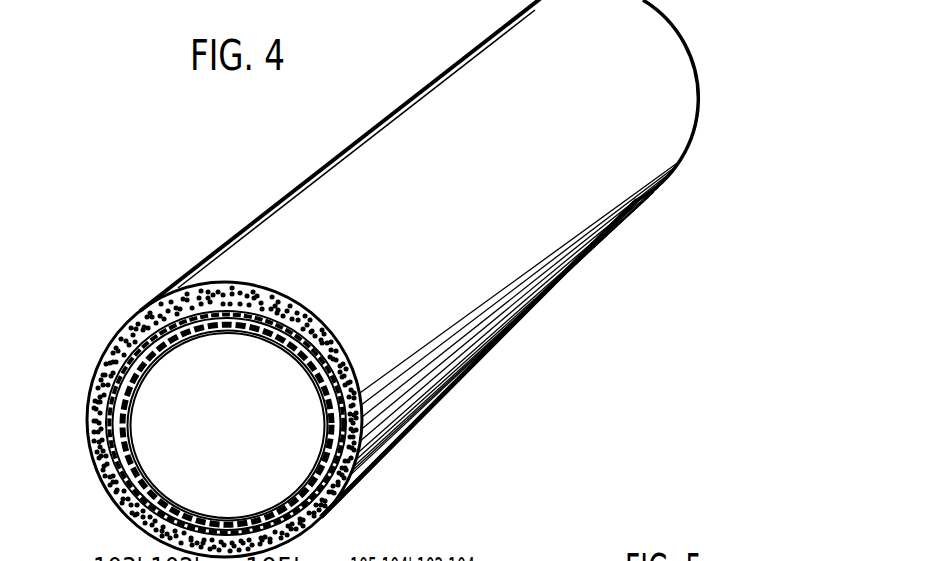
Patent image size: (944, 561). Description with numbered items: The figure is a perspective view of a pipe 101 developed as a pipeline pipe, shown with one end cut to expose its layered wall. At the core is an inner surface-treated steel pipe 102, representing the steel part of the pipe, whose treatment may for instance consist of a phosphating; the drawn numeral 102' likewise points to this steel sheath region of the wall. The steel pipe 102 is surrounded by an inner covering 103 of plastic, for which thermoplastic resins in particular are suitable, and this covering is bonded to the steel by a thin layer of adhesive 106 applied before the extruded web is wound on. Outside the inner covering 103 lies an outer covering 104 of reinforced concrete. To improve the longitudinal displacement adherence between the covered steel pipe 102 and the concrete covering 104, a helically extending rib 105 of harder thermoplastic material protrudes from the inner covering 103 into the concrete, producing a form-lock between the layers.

In FIG. 4, the pipe 101 is at (585, 274).
In FIG. 4, the steel pipe 102 is at (479, 358).
In FIG. 4, the outer sheath layer 102' is at (208, 400).
In FIG. 4, the inner covering 103 is at (127, 488).
In FIG. 4, the outer covering 104 is at (153, 305).
In FIG. 5, the outer covering 104 is at (542, 560).
In FIG. 4, the helically extending rib 105 is at (358, 398).
In FIG. 4, the layer of adhesive 106 is at (207, 297).